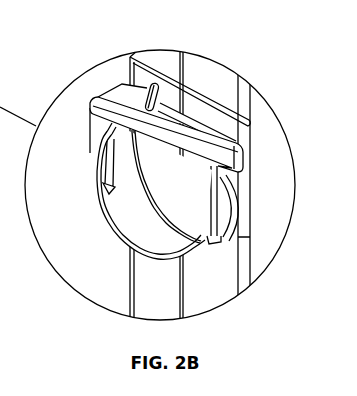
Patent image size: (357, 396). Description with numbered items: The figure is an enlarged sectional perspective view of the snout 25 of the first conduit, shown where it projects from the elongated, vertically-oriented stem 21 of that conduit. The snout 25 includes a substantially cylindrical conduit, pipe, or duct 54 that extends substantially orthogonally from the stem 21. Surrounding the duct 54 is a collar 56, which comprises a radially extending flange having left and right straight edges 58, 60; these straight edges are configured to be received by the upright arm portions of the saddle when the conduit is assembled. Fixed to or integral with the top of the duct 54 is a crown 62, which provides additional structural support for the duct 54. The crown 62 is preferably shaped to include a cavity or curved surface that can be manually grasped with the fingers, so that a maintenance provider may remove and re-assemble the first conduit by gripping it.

The stem 21 is at (272, 152).
The snout 25 is at (110, 227).
The duct 54 is at (223, 203).
The collar 56 is at (93, 148).
The left straight edge 58 is at (212, 203).
The right straight edge 60 is at (88, 133).
The crown 62 is at (164, 90).